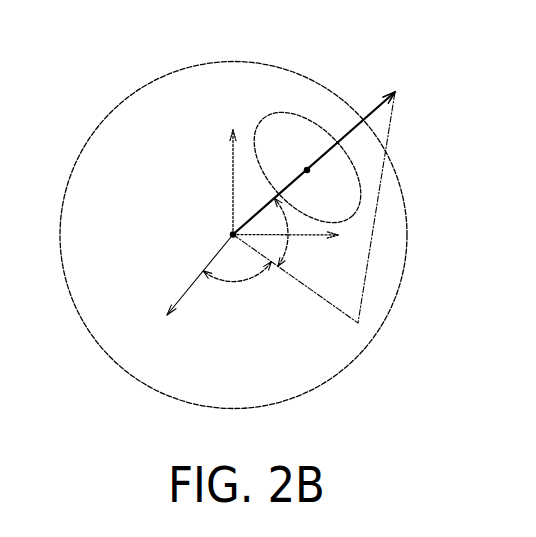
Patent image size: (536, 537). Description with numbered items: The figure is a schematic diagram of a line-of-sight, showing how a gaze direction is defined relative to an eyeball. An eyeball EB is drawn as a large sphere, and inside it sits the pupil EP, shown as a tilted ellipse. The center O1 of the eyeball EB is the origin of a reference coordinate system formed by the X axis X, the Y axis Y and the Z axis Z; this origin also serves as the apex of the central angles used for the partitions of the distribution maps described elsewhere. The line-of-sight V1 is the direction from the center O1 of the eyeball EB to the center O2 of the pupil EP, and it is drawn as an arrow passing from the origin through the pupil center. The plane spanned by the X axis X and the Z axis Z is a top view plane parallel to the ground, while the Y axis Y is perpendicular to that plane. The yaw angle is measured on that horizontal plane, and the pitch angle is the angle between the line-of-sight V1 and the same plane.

The eyeball EB is at (115, 108).
The pupil EP is at (278, 112).
The center of the eyeball O1 is at (215, 233).
The center of the pupil O2 is at (307, 167).
The line-of-sight V1 is at (324, 150).
The X axis X is at (297, 238).
The Y axis Y is at (232, 169).
The Z axis Z is at (192, 289).